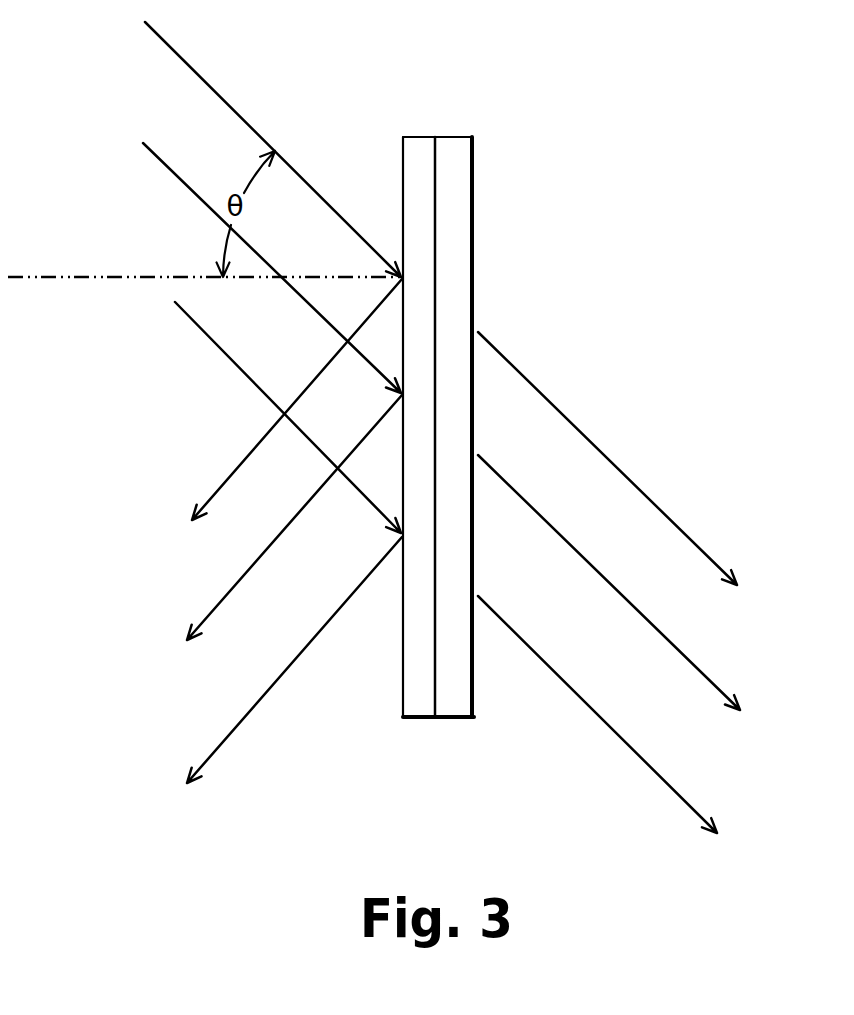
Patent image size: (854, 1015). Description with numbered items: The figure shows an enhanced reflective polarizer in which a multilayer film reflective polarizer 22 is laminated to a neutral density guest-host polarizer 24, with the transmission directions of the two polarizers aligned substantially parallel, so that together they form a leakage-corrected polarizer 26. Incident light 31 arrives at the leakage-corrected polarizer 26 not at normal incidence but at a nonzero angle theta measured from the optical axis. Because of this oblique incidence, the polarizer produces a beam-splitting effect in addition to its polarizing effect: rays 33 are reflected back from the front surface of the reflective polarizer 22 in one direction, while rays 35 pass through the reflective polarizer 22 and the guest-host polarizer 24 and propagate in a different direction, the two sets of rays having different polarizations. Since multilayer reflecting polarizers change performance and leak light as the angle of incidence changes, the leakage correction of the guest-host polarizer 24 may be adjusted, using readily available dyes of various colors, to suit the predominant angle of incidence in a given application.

The multilayer film reflective polarizer 22 is at (417, 153).
The neutral density guest-host polarizer 24 is at (451, 170).
The leakage-corrected polarizer 26 is at (392, 723).
The incident light 31 is at (157, 163).
The reflected rays 33 is at (215, 603).
The transmitted rays 35 is at (687, 655).